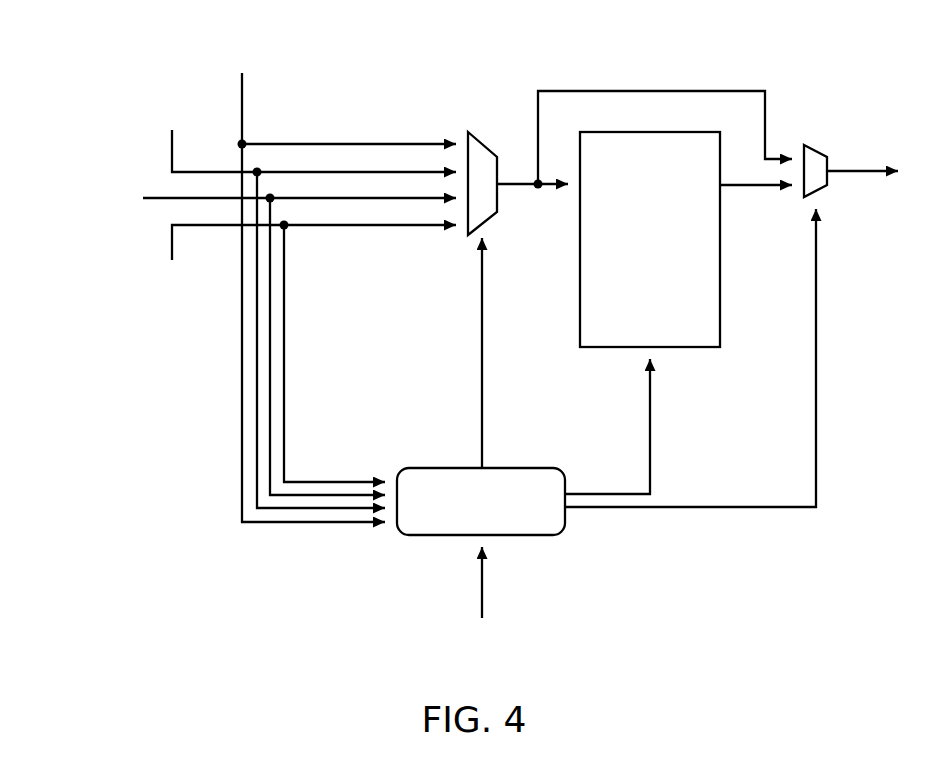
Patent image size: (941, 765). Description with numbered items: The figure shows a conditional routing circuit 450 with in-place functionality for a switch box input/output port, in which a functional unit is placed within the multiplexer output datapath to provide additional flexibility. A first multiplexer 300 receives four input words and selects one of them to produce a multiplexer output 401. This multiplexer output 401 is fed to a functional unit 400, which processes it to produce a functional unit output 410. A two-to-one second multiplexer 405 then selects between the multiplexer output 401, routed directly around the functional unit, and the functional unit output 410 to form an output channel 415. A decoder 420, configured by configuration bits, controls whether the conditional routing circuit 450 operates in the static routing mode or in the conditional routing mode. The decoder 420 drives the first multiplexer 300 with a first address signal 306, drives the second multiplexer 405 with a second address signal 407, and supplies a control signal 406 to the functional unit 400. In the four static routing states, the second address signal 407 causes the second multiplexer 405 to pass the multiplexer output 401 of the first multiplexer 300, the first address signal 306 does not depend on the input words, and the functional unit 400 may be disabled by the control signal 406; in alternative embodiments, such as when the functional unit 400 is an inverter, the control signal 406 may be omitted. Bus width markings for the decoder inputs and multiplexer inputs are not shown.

The conditional routing circuit 450 is at (483, 331).
The first multiplexer 300 is at (478, 232).
The functional unit 400 is at (650, 239).
The multiplexer output 401 is at (645, 91).
The second multiplexer 405 is at (825, 155).
The functional unit output 410 is at (760, 188).
The output channel 415 is at (860, 174).
The decoder 420 is at (530, 468).
The first address signal 306 is at (482, 367).
The control signal 406 is at (651, 420).
The second address signal 407 is at (816, 400).